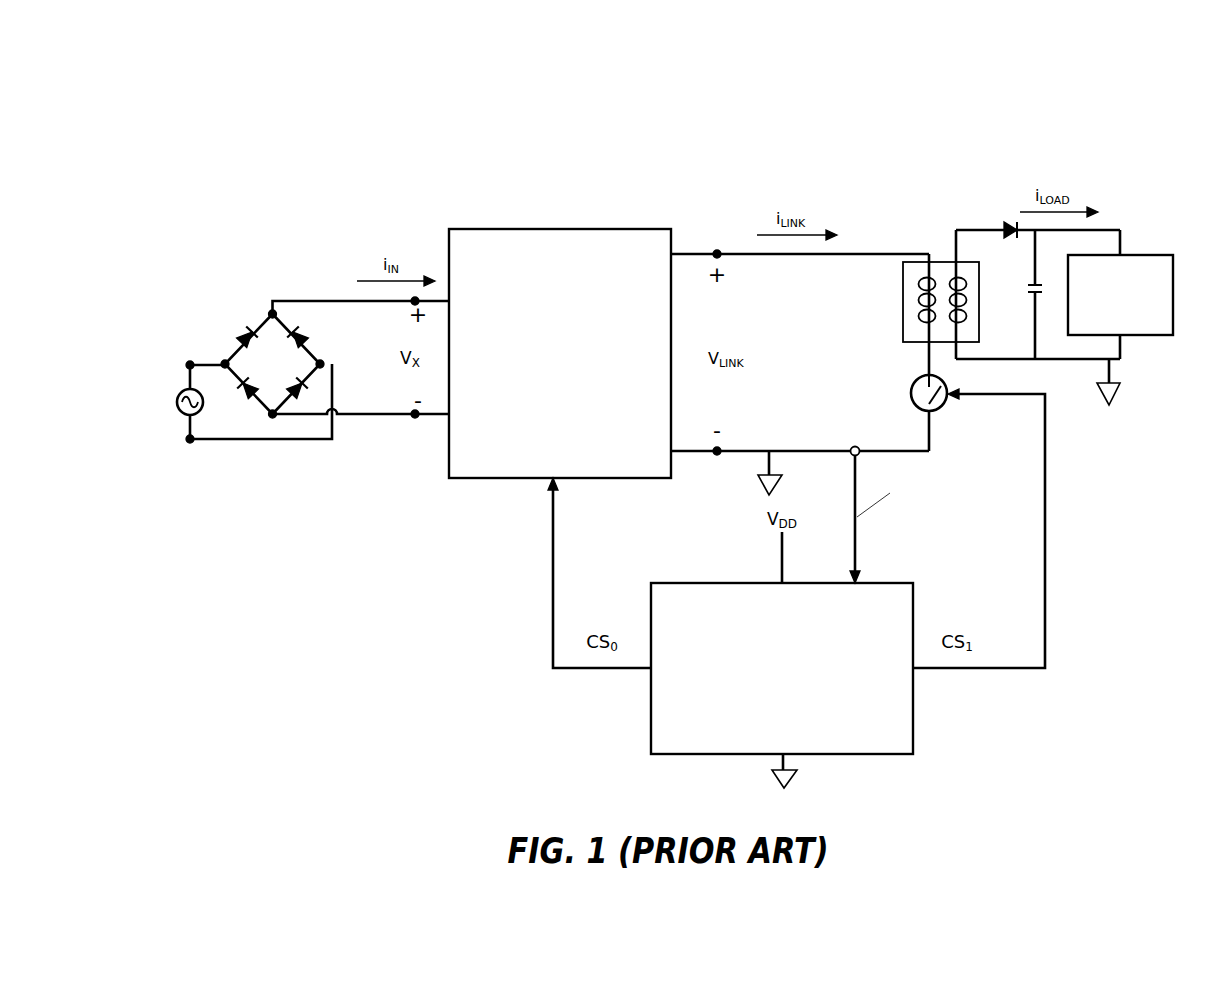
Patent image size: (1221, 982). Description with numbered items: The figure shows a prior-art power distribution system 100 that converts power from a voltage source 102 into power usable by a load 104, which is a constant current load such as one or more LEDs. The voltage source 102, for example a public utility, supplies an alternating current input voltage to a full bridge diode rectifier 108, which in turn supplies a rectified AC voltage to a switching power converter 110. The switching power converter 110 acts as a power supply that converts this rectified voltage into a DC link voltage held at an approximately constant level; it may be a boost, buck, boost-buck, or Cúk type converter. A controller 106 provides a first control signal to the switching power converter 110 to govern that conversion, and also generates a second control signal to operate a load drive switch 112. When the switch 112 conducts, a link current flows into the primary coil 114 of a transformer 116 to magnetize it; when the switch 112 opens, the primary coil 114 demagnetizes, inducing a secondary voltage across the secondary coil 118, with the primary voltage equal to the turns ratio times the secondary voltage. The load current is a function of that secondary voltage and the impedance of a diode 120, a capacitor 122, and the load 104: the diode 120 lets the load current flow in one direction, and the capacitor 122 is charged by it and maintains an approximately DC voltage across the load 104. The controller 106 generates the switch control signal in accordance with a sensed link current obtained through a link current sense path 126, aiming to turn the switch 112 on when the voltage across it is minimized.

The power distribution system 100 is at (1009, 178).
The voltage source 102 is at (180, 416).
The load 104 is at (1120, 317).
The controller 106 is at (782, 685).
The full bridge diode rectifier 108 is at (272, 364).
The switching power converter 110 is at (560, 353).
The load drive switch 112 is at (944, 405).
The primary coil 114 is at (920, 319).
The transformer 116 is at (941, 293).
The secondary coil 118 is at (965, 322).
The diode 120 is at (1010, 224).
The capacitor 122 is at (1029, 292).
The link current sense path 126 is at (853, 502).